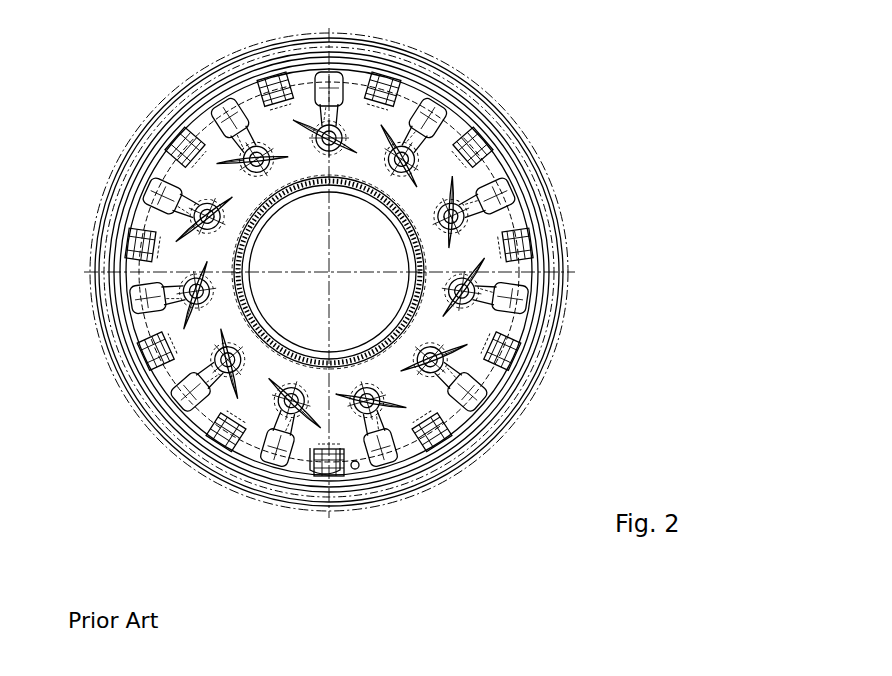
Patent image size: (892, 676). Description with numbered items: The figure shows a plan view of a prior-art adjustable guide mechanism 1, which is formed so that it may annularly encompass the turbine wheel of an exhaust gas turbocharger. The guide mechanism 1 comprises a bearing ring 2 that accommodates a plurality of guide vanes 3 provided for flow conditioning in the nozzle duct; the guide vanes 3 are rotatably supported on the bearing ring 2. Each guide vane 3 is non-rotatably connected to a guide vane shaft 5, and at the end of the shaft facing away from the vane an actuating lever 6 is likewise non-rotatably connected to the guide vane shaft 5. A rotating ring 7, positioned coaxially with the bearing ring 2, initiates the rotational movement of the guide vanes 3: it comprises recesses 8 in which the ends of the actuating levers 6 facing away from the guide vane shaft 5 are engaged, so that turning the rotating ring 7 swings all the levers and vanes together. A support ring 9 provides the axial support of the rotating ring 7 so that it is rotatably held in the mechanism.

The guide mechanism 1 is at (628, 168).
The bearing ring 2 is at (428, 183).
The guide vanes 3 is at (534, 262).
The guide vane shaft 5 is at (373, 403).
The actuating lever 6 is at (496, 398).
The rotating ring 7 is at (518, 322).
The recesses 8 is at (283, 440).
The support ring 9 is at (512, 128).